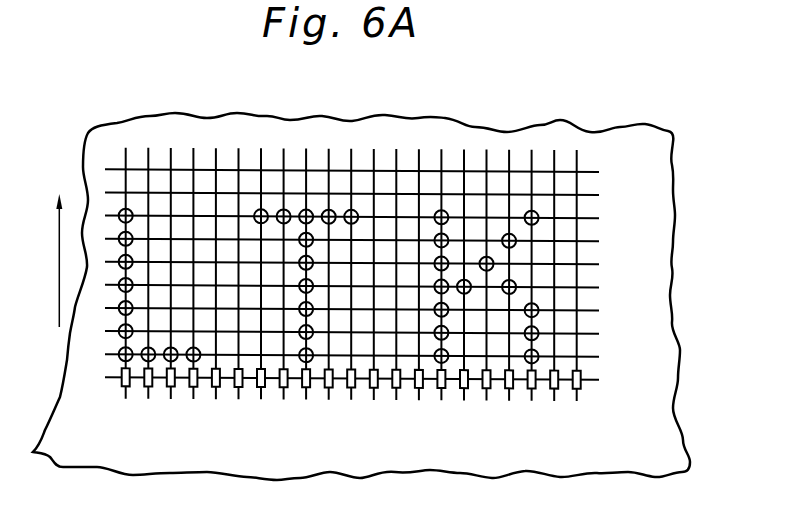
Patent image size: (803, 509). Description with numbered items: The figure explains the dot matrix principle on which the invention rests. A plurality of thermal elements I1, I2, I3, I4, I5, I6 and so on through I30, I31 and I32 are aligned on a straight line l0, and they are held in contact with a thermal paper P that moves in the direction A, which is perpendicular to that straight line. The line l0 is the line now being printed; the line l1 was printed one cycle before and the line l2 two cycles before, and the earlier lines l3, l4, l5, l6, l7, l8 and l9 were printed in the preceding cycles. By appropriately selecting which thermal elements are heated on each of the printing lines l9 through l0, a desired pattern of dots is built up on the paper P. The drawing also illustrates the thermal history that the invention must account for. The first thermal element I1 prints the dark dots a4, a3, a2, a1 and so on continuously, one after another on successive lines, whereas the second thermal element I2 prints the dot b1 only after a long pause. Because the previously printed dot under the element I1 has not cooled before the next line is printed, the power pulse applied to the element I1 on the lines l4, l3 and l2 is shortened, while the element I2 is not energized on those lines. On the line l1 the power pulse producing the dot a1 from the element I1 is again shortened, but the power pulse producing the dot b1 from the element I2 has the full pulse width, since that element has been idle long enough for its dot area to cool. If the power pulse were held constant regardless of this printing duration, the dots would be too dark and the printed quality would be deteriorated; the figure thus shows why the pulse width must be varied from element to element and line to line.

The thermal paper P is at (673, 150).
The perpendicular direction A is at (58, 250).
The printing line l0 is at (366, 379).
The printing line l1 is at (366, 356).
The printing line l2 is at (366, 333).
The printing line l3 is at (366, 309).
The printing line l4 is at (366, 286).
The printing line l5 is at (366, 263).
The printing line l6 is at (366, 240).
The printing line l7 is at (366, 217).
The printing line l8 is at (366, 194).
The printing line l9 is at (366, 171).
The thermal element I1 is at (120, 389).
The thermal element I2 is at (157, 385).
The thermal element I3 is at (180, 385).
The thermal element I4 is at (202, 385).
The thermal element I5 is at (223, 384).
The thermal element I6 is at (245, 384).
The thermal element I30 is at (530, 390).
The thermal element I31 is at (555, 390).
The thermal element I32 is at (578, 390).
The dark dot a1 is at (108, 355).
The dark dot a2 is at (108, 330).
The dark dot a3 is at (108, 307).
The dark dot a4 is at (118, 280).
The dot b1 is at (152, 348).